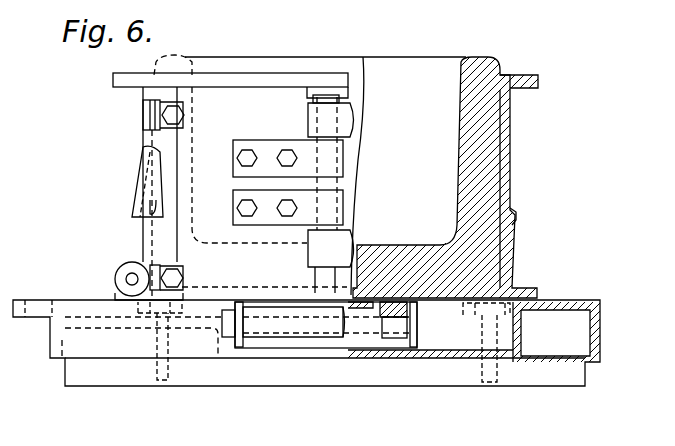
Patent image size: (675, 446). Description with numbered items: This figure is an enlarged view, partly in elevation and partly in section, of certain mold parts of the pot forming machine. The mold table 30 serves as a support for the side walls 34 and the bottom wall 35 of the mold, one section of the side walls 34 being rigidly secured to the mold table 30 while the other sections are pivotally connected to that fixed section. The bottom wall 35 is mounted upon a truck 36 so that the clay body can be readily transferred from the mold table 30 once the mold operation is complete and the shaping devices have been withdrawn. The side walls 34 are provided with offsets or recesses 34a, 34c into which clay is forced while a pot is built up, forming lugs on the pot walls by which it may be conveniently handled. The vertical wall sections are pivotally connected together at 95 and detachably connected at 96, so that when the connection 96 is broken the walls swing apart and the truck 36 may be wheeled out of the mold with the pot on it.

The mold table 30 is at (582, 297).
The side walls of the mold 34 is at (512, 246).
The offset or recess of the mold side wall 34a is at (538, 78).
The offset or recess of the mold side wall 34c is at (530, 197).
The bottom wall of the mold 35 is at (443, 303).
The truck 36 is at (292, 338).
The pivotal connection of mold sections 95 is at (308, 113).
The detachable connection of mold sections 96 is at (178, 130).